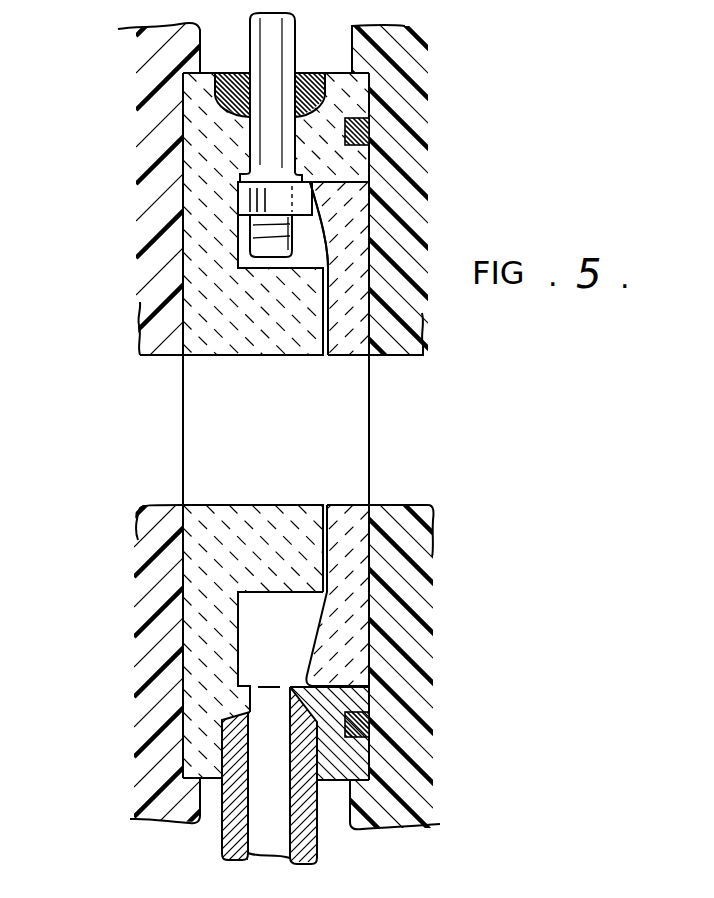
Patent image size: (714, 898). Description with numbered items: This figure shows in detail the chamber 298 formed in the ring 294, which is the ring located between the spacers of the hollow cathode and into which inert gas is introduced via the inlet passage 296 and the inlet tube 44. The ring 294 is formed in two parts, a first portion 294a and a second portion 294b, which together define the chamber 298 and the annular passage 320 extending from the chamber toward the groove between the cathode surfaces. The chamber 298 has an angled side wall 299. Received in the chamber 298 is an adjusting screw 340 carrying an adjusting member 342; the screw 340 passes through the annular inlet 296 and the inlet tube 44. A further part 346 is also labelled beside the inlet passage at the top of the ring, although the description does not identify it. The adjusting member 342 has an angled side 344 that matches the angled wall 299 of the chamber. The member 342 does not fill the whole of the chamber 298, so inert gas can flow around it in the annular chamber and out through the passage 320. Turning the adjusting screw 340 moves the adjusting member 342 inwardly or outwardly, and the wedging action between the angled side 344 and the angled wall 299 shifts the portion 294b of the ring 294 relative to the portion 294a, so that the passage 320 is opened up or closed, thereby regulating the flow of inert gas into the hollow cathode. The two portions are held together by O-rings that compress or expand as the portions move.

The inlet tube 44 is at (313, 833).
The ring 294 is at (347, 752).
The first portion of the ring 294a is at (243, 313).
The second portion of the ring 294b is at (408, 350).
The inlet passage 296 is at (326, 88).
The chamber 298 is at (245, 260).
The angled side wall 299 is at (308, 235).
The annular passage 320 is at (338, 291).
The adjusting screw 340 is at (275, 137).
The adjusting member 342 is at (268, 196).
The angled side 344 is at (303, 173).
The gland packing 346 is at (214, 94).